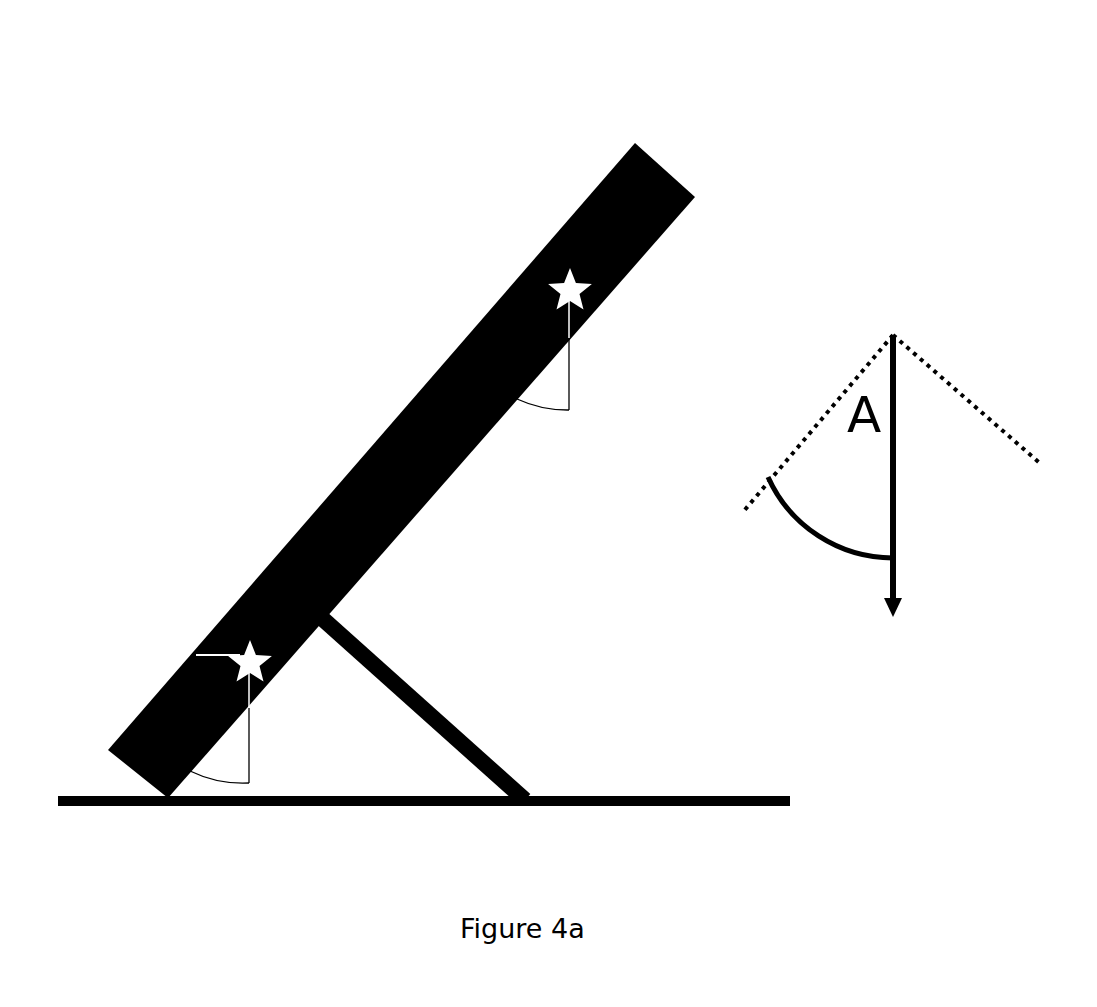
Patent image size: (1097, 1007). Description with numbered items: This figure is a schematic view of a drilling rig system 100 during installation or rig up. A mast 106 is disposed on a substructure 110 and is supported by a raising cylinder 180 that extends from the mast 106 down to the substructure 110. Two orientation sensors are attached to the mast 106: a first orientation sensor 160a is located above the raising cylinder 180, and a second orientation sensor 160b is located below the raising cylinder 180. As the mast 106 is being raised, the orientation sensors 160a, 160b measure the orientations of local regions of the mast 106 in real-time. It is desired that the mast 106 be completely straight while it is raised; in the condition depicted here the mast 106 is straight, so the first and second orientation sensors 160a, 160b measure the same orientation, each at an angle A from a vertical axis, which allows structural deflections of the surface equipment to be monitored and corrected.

The drilling rig system 100 is at (947, 188).
The mast 106 is at (420, 392).
The substructure 110 is at (424, 787).
The first orientation sensor 160a is at (547, 246).
The second orientation sensor 160b is at (225, 618).
The raising cylinder 180 is at (398, 666).